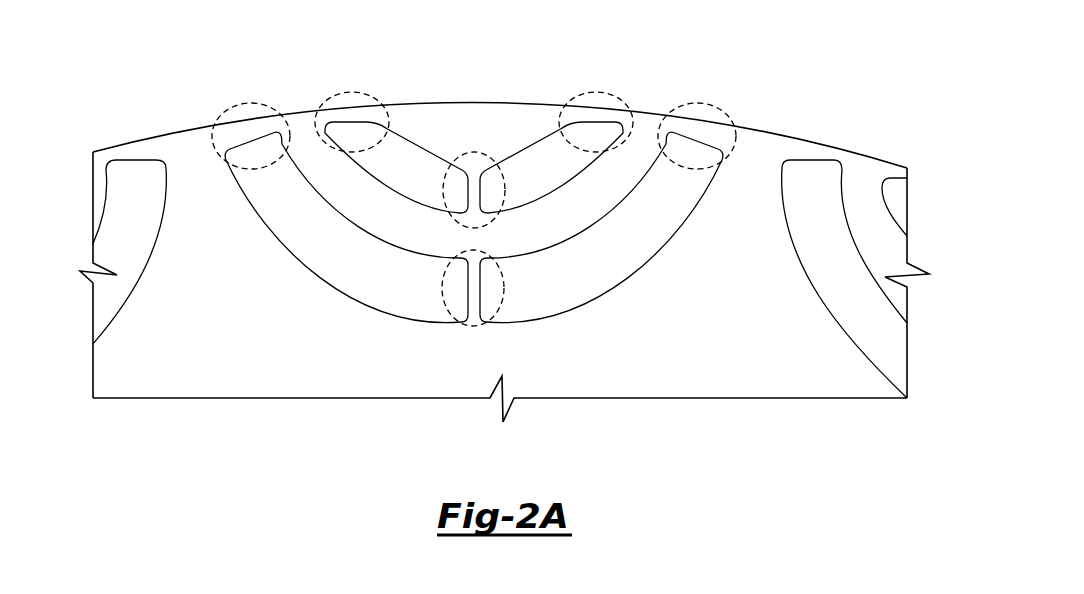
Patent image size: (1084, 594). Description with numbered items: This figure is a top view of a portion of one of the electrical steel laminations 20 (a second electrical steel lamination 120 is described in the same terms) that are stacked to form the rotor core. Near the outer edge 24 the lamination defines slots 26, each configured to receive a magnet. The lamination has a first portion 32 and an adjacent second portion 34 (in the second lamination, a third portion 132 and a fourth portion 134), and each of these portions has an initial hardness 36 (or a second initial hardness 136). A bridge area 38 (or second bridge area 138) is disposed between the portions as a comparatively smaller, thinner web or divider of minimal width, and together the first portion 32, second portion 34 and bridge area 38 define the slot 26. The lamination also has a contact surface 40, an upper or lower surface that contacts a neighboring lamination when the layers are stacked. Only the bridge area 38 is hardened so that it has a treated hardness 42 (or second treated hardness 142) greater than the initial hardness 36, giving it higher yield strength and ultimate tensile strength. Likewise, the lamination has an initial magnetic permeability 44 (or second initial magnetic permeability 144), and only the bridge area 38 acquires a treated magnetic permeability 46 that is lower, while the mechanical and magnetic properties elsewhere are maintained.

The electrical steel lamination 20 is at (504, 277).
The second electrical steel lamination 120 is at (504, 277).
The outer edge 24 is at (158, 136).
The slot 26 is at (110, 298).
The first portion 32 is at (493, 222).
The third portion 132 is at (493, 222).
The second portion 34 is at (300, 154).
The fourth portion 134 is at (493, 222).
The initial hardness 36 is at (493, 222).
The second initial hardness 136 is at (493, 222).
The bridge area 38 is at (491, 192).
The second bridge area 138 is at (491, 192).
The contact surface 40 is at (770, 382).
The treated hardness 42 is at (491, 192).
The second treated hardness 142 is at (357, 92).
The initial magnetic permeability 44 is at (493, 222).
The second initial magnetic permeability 144 is at (493, 222).
The treated magnetic permeability 46 is at (491, 192).